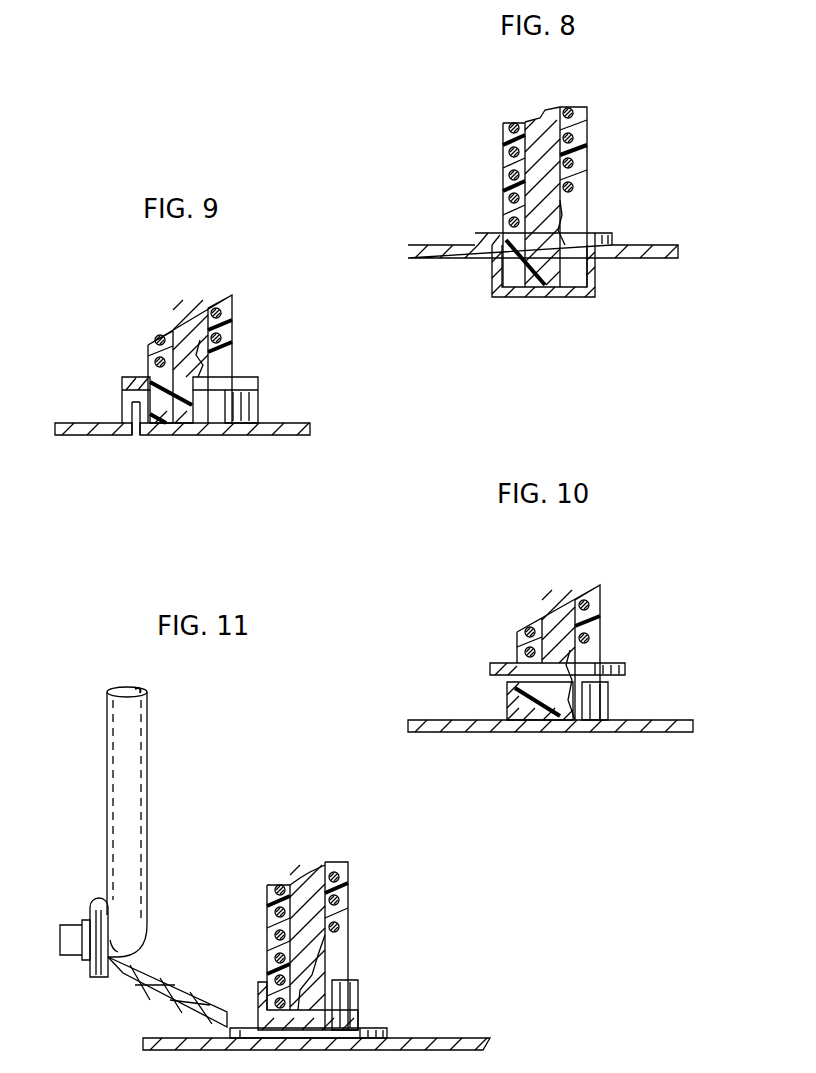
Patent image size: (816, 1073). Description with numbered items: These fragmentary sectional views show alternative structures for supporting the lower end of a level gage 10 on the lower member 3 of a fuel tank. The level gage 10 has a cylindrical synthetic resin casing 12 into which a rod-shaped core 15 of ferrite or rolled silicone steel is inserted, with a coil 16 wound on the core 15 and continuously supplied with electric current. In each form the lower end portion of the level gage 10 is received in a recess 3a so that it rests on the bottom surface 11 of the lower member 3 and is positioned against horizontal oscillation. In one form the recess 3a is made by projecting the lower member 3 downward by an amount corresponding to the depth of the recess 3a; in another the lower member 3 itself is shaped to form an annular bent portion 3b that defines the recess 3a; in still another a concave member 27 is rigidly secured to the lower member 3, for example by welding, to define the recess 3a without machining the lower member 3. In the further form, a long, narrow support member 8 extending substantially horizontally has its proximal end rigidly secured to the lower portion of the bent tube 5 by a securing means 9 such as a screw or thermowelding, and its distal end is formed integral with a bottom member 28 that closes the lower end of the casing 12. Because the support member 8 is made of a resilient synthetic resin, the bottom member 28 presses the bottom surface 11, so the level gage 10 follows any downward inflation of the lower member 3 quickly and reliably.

In FIG. 8, the lower member 3 is at (667, 243).
In FIG. 9, the lower member 3 is at (300, 423).
In FIG. 10, the lower member 3 is at (645, 733).
In FIG. 11, the lower member 3 is at (466, 1038).
In FIG. 8, the recess 3a is at (589, 277).
In FIG. 9, the recess 3a is at (153, 427).
In FIG. 10, the recess 3a is at (516, 696).
In FIG. 11, the recess 3a is at (270, 978).
In FIG. 9, the annular bent portion 3b is at (122, 384).
In FIG. 11, the bent tube 5 is at (118, 782).
In FIG. 11, the support member 8 is at (140, 975).
In FIG. 11, the securing means 9 is at (93, 898).
In FIG. 8, the level gage 10 is at (576, 179).
In FIG. 9, the level gage 10 is at (217, 342).
In FIG. 10, the level gage 10 is at (571, 646).
In FIG. 11, the level gage 10 is at (314, 932).
In FIG. 8, the bottom surface 11 is at (632, 245).
In FIG. 9, the bottom surface 11 is at (273, 421).
In FIG. 10, the bottom surface 11 is at (655, 720).
In FIG. 11, the bottom surface 11 is at (433, 1038).
In FIG. 8, the casing 12 is at (515, 121).
In FIG. 9, the casing 12 is at (233, 318).
In FIG. 10, the casing 12 is at (601, 600).
In FIG. 11, the casing 12 is at (349, 900).
In FIG. 8, the core 15 is at (548, 158).
In FIG. 9, the core 15 is at (186, 330).
In FIG. 10, the core 15 is at (554, 615).
In FIG. 11, the core 15 is at (305, 870).
In FIG. 8, the coil 16 is at (569, 108).
In FIG. 9, the coil 16 is at (217, 305).
In FIG. 10, the coil 16 is at (527, 626).
In FIG. 11, the coil 16 is at (268, 906).
In FIG. 10, the concave member 27 is at (610, 692).
In FIG. 11, the bottom member 28 is at (359, 994).